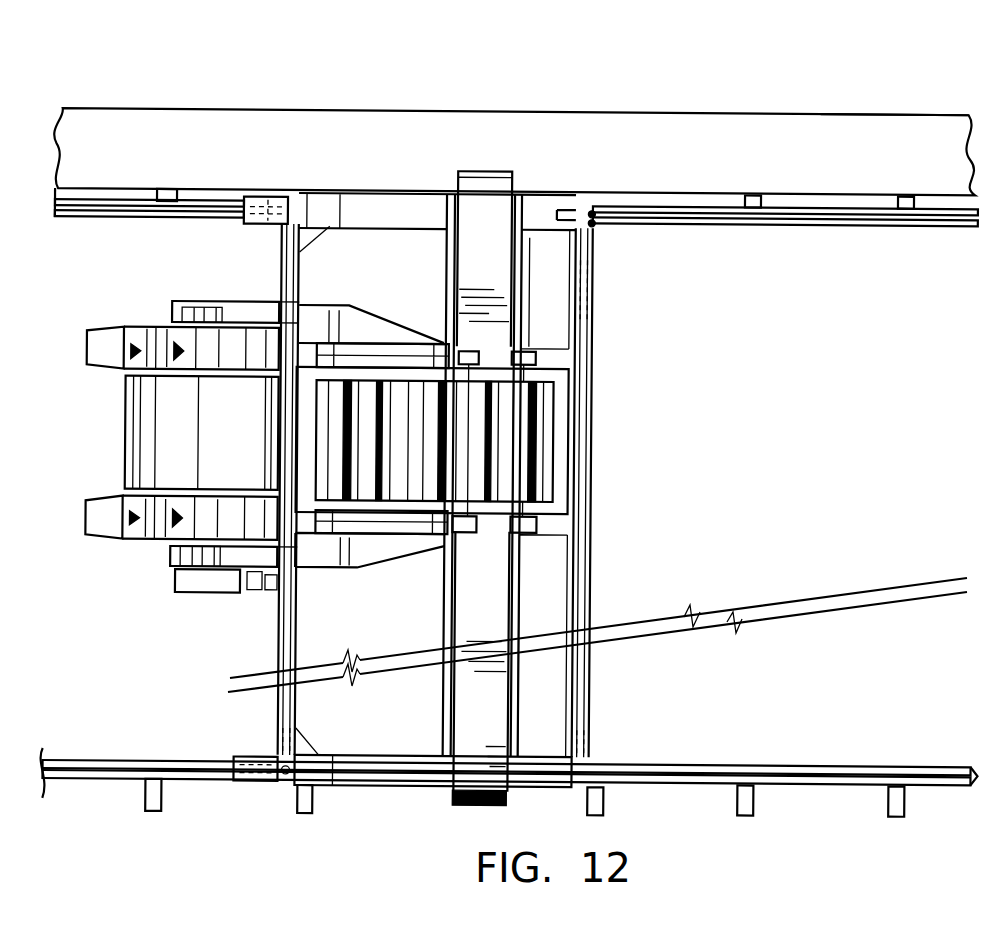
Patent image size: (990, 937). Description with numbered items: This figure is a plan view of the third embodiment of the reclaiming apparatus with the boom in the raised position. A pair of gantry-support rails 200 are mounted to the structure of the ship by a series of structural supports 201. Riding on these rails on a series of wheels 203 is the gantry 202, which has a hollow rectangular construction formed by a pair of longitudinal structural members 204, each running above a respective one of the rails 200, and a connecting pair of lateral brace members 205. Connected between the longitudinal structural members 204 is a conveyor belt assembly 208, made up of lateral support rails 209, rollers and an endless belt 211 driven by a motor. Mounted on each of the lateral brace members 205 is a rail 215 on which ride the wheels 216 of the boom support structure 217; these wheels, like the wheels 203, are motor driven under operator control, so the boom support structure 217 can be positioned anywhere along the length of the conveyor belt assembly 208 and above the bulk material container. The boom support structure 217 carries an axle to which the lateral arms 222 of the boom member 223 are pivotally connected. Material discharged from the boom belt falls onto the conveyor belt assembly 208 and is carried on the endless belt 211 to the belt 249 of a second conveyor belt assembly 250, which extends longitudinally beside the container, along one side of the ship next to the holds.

The belt 249 is at (610, 135).
The second conveyor belt assembly 250 is at (804, 110).
The gantry-support rails 200 is at (798, 224).
The structural supports 201 is at (166, 206).
The wheels 203 is at (269, 196).
The longitudinal structural members 204 is at (390, 215).
The conveyor belt assembly 208 is at (586, 560).
The lateral support rails 209 is at (446, 598).
The wheels 216 is at (592, 278).
The lateral brace members 205 is at (280, 648).
The rail 215 is at (280, 734).
The lateral arms 222 is at (365, 325).
The boom member 223 is at (331, 575).
The boom support structure 217 is at (600, 448).
The gantry 202 is at (365, 798).
The endless belt 211 is at (496, 790).